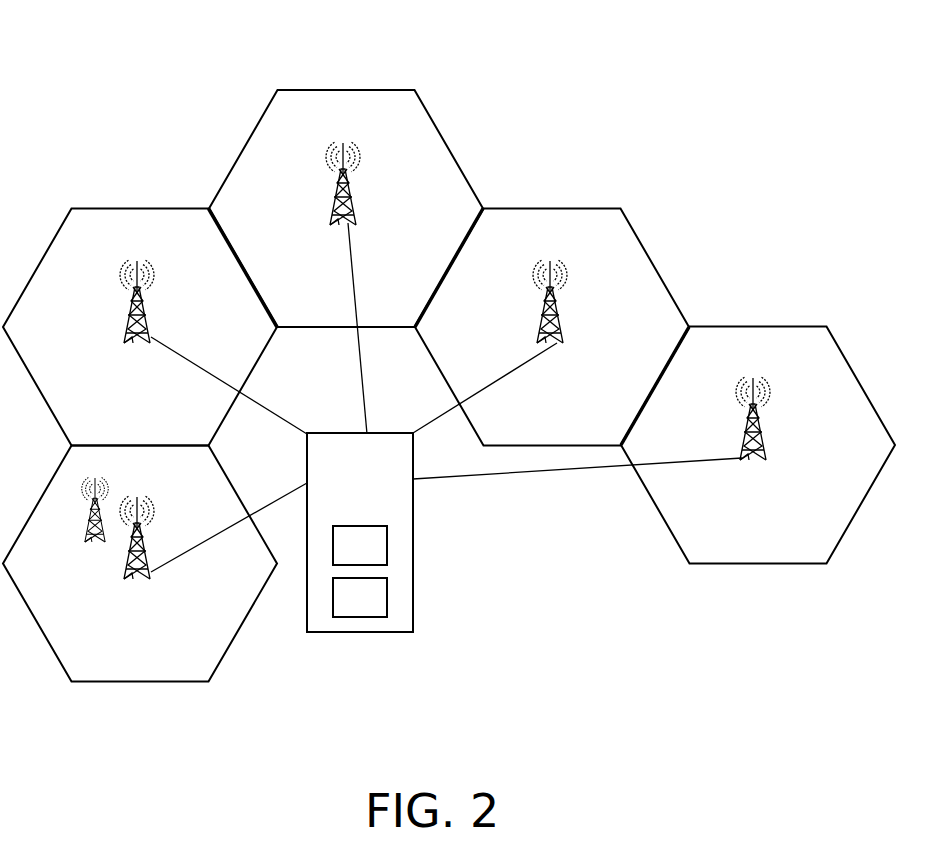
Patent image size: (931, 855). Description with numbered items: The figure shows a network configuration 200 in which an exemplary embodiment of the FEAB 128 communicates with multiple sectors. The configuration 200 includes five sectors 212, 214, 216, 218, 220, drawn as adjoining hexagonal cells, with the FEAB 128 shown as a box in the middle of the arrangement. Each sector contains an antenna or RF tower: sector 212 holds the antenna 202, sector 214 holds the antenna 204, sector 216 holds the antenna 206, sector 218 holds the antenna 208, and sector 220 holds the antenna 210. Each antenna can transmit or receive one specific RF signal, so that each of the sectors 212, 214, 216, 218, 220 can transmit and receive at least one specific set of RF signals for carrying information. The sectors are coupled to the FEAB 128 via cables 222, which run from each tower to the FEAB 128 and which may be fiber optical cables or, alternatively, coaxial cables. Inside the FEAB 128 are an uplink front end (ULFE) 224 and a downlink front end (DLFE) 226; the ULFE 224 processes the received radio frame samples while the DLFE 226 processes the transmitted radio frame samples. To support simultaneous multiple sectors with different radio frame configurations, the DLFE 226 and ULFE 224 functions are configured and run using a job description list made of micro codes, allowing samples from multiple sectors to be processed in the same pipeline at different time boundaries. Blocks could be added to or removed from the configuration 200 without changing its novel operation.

The network configuration 200 is at (120, 35).
The antenna or RF tower 202 is at (128, 480).
The antenna or RF tower 204 is at (160, 280).
The antenna or RF tower 206 is at (367, 163).
The antenna or RF tower 208 is at (572, 282).
The antenna or RF tower 210 is at (778, 398).
The sector 212 is at (159, 656).
The sector 214 is at (162, 414).
The sector 216 is at (324, 300).
The sector 218 is at (593, 430).
The sector 220 is at (775, 550).
The cables 222 is at (558, 473).
The uplink front end (ULFE) 224 is at (421, 552).
The downlink front end (DLFE) 226 is at (421, 608).
The FEAB 128 is at (386, 495).